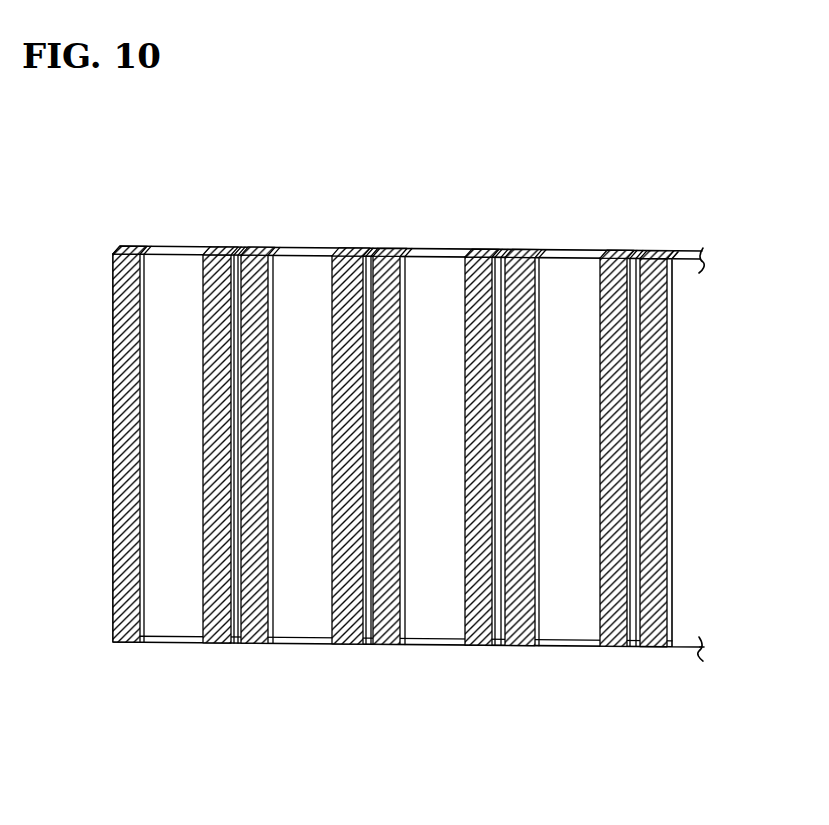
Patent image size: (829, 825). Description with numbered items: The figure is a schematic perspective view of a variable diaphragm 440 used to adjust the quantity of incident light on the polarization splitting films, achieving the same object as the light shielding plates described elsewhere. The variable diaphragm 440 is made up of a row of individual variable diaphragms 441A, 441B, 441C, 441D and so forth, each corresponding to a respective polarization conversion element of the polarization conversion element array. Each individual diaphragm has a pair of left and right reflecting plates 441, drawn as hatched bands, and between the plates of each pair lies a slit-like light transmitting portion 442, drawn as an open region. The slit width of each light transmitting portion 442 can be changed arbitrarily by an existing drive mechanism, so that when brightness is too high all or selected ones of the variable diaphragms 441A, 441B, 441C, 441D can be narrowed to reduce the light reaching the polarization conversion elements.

The variable diaphragm 440 is at (465, 182).
The reflecting plates 441 is at (388, 450).
The light transmitting portion 442 is at (178, 246).
The variable diaphragm 441A is at (215, 645).
The variable diaphragm 441B is at (345, 645).
The variable diaphragm 441C is at (480, 645).
The variable diaphragm 441D is at (615, 645).